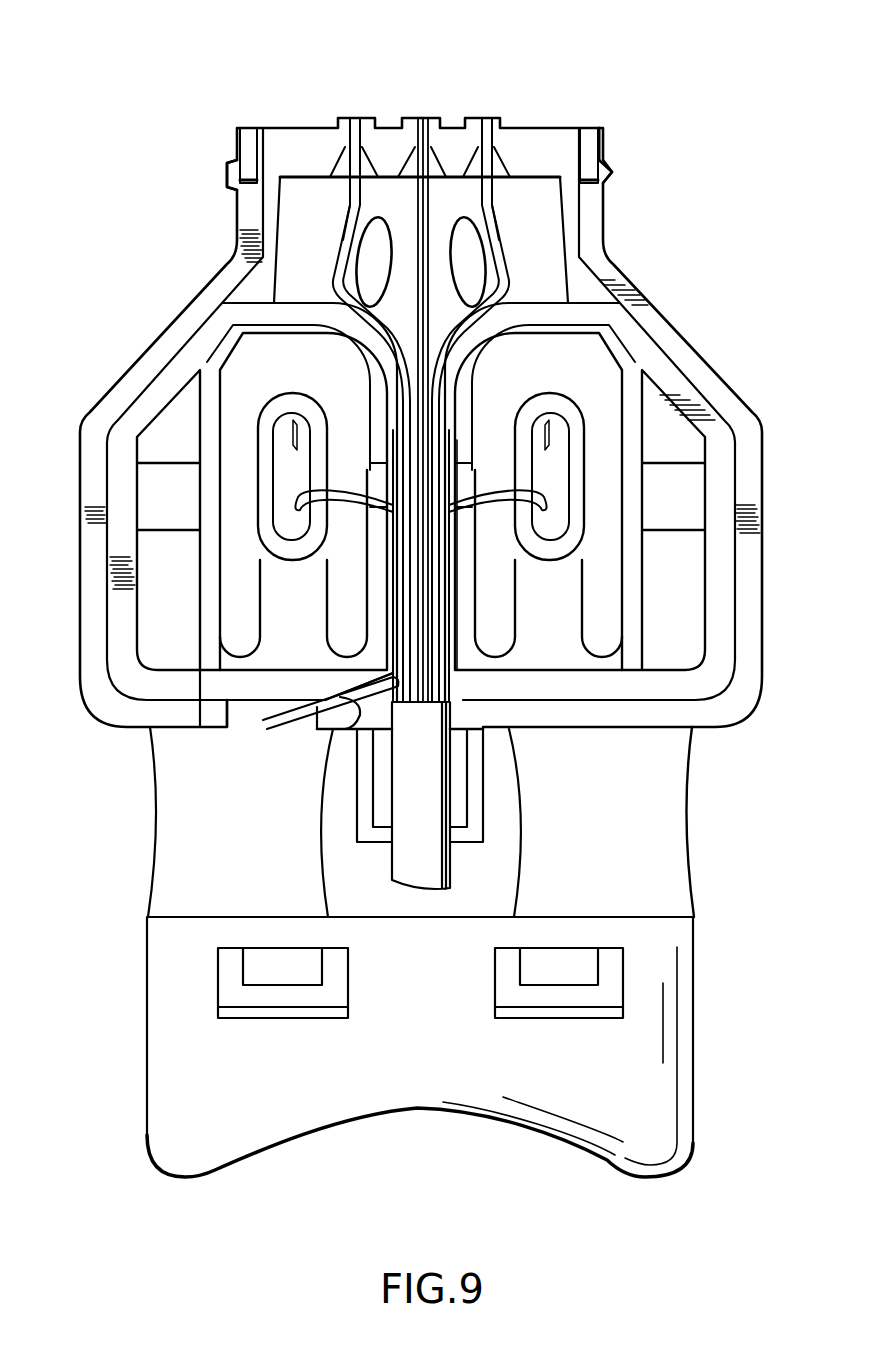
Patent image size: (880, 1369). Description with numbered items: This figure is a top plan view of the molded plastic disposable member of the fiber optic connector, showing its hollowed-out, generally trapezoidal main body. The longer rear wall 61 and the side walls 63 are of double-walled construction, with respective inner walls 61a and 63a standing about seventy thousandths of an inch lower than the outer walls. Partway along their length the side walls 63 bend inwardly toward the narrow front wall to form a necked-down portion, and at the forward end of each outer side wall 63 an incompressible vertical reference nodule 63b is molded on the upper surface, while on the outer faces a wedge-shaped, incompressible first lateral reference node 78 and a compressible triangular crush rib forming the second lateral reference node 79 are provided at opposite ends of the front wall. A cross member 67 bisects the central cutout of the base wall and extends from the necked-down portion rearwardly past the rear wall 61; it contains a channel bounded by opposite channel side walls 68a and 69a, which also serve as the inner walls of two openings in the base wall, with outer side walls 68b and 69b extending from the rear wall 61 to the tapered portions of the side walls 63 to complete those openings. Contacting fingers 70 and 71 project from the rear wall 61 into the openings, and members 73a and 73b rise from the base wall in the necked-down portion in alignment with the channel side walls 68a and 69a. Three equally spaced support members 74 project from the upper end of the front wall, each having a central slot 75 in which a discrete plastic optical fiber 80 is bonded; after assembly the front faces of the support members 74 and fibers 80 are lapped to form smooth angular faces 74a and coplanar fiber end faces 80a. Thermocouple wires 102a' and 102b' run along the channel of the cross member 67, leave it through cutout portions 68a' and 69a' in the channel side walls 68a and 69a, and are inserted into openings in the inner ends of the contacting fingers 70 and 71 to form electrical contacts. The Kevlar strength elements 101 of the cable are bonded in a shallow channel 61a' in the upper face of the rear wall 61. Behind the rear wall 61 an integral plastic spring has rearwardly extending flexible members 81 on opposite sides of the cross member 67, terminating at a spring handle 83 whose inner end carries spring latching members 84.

The rear wall 61 is at (653, 723).
The inner wall 61a is at (557, 791).
The shallow channel 61a' is at (319, 737).
The side walls 63 is at (745, 627).
The inner walls 63a is at (717, 660).
The vertical reference nodule 63b is at (247, 135).
The cross member 67 is at (500, 622).
The channel side wall 68a is at (628, 540).
The cutout portion 68a' is at (508, 544).
The outer side wall 68b is at (633, 430).
The channel side wall 69a is at (211, 513).
The cutout portion 69a' is at (330, 544).
The outer side wall 69b is at (137, 663).
The contacting finger 70 is at (561, 648).
The contacting finger 71 is at (306, 628).
The member 73a is at (462, 215).
The member 73b is at (385, 215).
The support member 74 is at (478, 120).
The lapped end face 74a is at (350, 120).
The central slot 75 is at (480, 157).
The first lateral reference node 78 is at (226, 173).
The second lateral reference node 79 is at (606, 172).
The optical fiber 80 is at (345, 213).
The coplanar face 80a is at (478, 123).
The flexible member 81 is at (665, 873).
The spring handle 83 is at (673, 1117).
The spring latching member 84 is at (590, 973).
The plate 101 is at (323, 680).
The first thermocouple wire 102a' is at (542, 458).
The second thermocouple wire 102b' is at (304, 458).